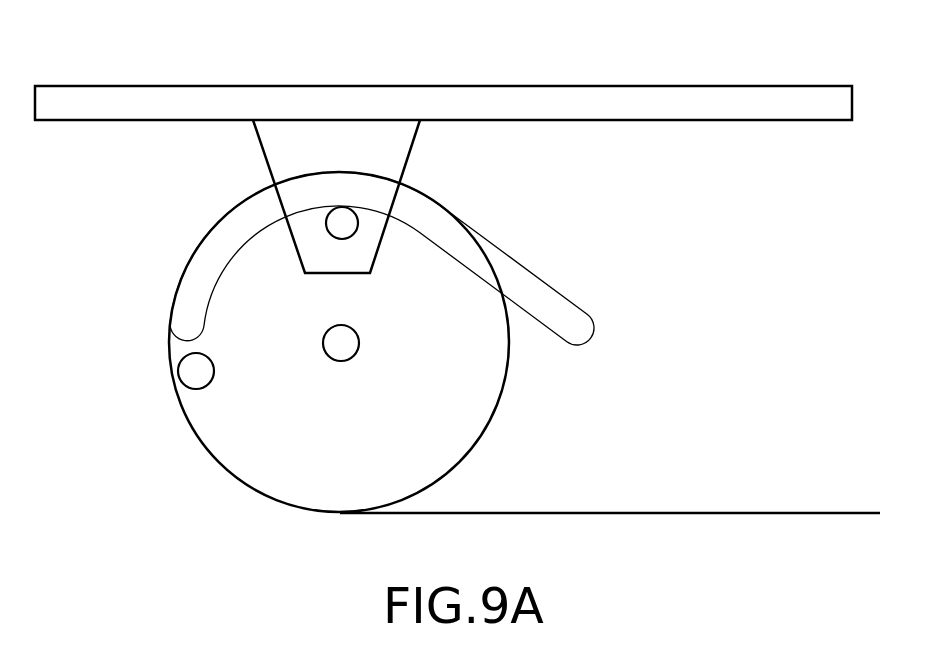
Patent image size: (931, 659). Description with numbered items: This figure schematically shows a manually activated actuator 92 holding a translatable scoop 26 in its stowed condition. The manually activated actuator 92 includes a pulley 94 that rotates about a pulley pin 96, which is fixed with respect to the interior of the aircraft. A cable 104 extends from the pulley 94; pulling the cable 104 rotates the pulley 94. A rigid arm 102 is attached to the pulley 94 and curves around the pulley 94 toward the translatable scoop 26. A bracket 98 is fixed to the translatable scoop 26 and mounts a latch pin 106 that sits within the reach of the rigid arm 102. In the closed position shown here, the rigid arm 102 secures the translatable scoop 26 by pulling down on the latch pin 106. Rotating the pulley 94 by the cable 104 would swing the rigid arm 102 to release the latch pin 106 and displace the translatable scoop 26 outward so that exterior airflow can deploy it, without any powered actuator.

The translatable scoop 26 is at (707, 100).
The manually activated actuator 92 is at (102, 341).
The pulley 94 is at (473, 393).
The pulley pin 96 is at (335, 350).
The bracket 98 is at (273, 143).
The rigid arm 102 is at (553, 310).
The cable 104 is at (677, 513).
The latch pin 106 is at (347, 226).